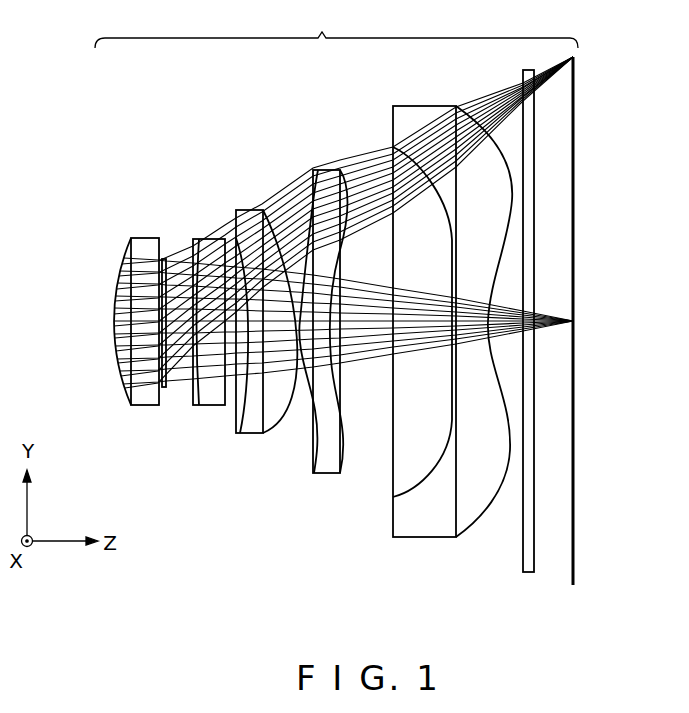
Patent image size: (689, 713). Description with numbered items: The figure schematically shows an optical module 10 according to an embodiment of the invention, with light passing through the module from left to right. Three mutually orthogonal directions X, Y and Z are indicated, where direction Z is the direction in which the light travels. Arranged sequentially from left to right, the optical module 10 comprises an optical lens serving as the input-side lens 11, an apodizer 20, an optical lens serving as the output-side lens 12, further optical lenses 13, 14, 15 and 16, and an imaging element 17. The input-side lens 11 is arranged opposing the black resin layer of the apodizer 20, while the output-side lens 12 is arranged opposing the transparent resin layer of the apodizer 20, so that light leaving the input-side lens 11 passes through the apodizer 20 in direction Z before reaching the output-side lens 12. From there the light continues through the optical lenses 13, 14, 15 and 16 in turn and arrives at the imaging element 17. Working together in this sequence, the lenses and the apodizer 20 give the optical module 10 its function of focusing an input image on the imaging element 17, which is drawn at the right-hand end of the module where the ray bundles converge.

The optical module 10 is at (309, 24).
The input-side lens 11 is at (145, 407).
The apodizer 20 is at (166, 388).
The output-side lens 12 is at (208, 407).
The optical lens 13 is at (252, 435).
The optical lens 14 is at (325, 475).
The optical lens 15 is at (423, 539).
The optical lens 16 is at (529, 574).
The imaging element 17 is at (576, 571).